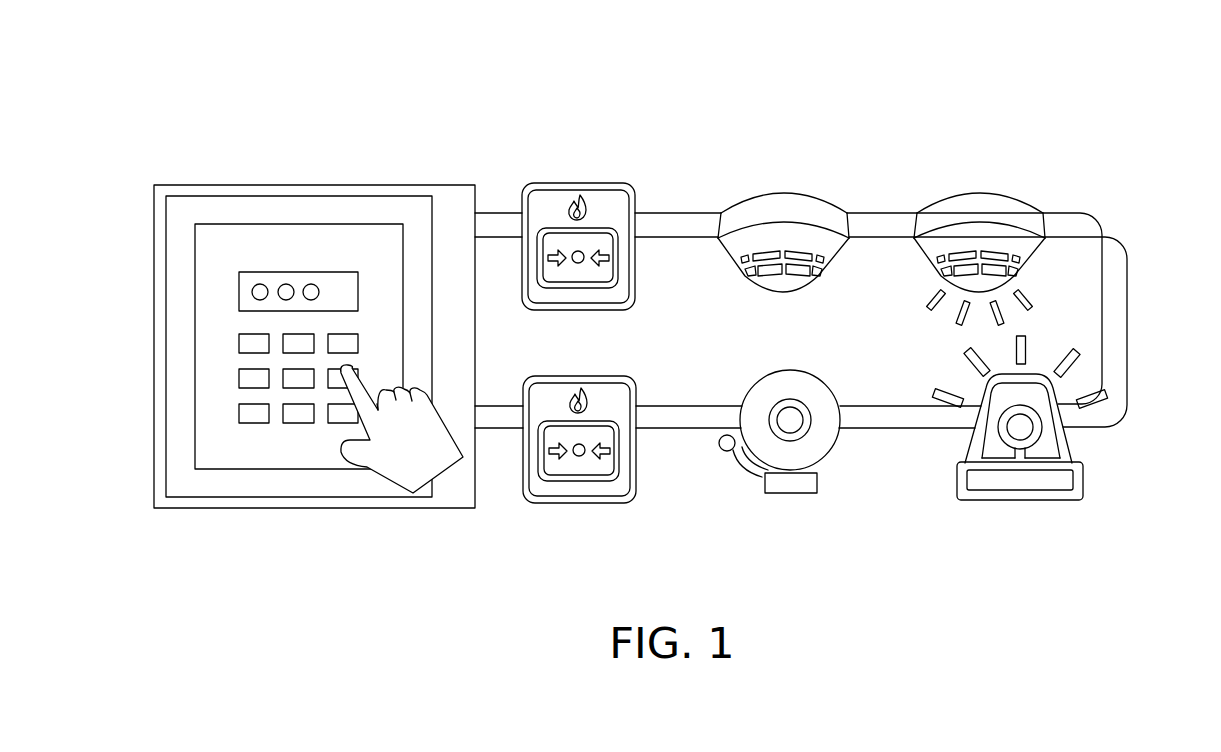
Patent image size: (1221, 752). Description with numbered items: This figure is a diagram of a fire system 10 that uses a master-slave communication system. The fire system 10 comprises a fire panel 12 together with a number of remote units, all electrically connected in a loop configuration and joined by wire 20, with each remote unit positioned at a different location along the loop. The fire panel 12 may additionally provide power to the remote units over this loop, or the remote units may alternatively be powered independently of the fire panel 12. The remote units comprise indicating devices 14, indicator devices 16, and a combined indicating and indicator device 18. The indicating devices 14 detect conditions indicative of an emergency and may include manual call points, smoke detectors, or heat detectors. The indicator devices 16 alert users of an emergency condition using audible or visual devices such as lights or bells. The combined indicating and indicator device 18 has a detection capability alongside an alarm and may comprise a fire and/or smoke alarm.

The fire system 10 is at (157, 94).
The fire panel 12 is at (297, 184).
The indicating devices 14 is at (613, 183).
The indicator devices 16 is at (960, 497).
The combined indicating and indicator device 18 is at (980, 192).
The wire 20 is at (1125, 302).